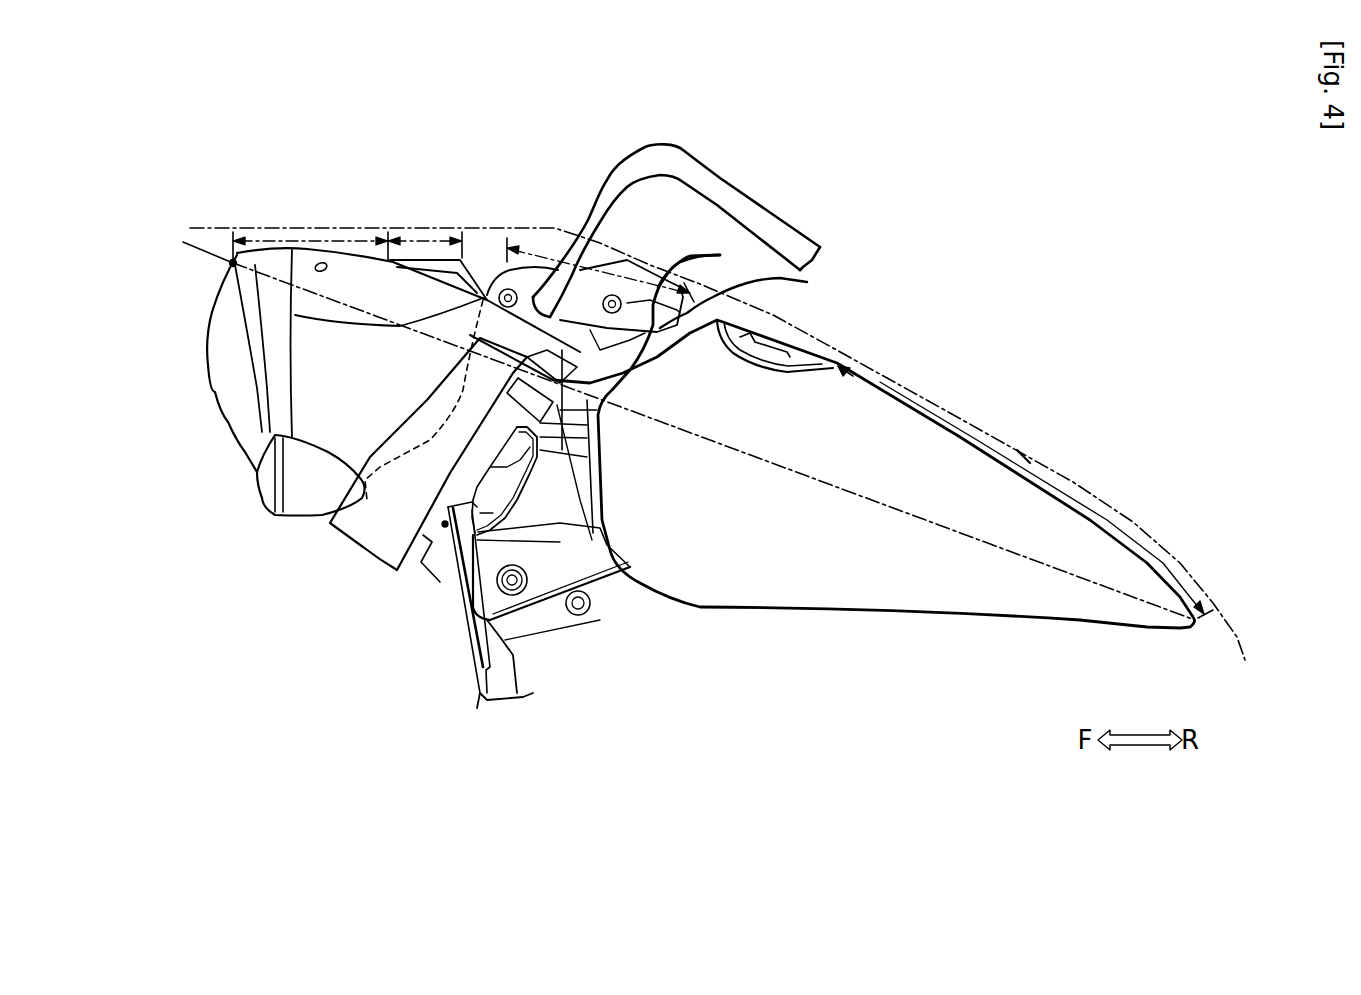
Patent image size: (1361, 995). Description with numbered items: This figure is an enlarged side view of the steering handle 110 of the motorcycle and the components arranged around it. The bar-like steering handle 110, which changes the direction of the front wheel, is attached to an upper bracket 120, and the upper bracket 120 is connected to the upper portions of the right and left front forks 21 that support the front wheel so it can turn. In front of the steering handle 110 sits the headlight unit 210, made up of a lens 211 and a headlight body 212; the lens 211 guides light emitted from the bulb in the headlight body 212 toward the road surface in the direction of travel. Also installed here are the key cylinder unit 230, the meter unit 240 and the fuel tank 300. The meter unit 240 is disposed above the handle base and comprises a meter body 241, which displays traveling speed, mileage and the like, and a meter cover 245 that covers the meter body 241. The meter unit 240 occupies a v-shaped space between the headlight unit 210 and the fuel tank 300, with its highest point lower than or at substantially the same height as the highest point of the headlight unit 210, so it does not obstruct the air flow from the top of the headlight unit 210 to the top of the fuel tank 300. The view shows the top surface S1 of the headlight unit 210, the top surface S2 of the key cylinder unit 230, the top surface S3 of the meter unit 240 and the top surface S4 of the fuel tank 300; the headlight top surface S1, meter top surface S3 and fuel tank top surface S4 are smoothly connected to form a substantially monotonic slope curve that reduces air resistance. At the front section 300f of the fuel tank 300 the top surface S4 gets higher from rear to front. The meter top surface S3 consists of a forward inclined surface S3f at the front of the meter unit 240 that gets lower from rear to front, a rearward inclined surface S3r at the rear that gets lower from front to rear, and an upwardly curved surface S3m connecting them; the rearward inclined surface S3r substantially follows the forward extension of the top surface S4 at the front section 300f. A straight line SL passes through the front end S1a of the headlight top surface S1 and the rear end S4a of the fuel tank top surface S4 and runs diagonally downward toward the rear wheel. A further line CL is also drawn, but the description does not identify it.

The steering handle 110 is at (765, 205).
The upper bracket 120 is at (603, 600).
The front forks 21 is at (383, 553).
The headlight unit 210 is at (298, 553).
The lens 211 is at (212, 352).
The headlight body 212 is at (308, 380).
The key cylinder unit 230 is at (295, 315).
The meter unit 240 is at (874, 306).
The meter body 241 is at (733, 322).
The meter cover 245 is at (807, 282).
The fuel tank 300 is at (703, 587).
The front section of fuel tank 300f is at (852, 400).
The top surface of headlight unit S1 is at (315, 237).
The front end of headlight top surface S1a is at (230, 264).
The top surface of key cylinder unit S2 is at (430, 240).
The top surface of meter unit S3 is at (650, 264).
The forward inclined surface S3f is at (500, 270).
The curved surface S3m is at (577, 305).
The rearward inclined surface S3r is at (711, 263).
The top surface of fuel tank S4 is at (1025, 442).
The rear end of fuel tank top surface S4a is at (1245, 655).
The center line CL is at (1190, 563).
The straight line SL is at (970, 540).